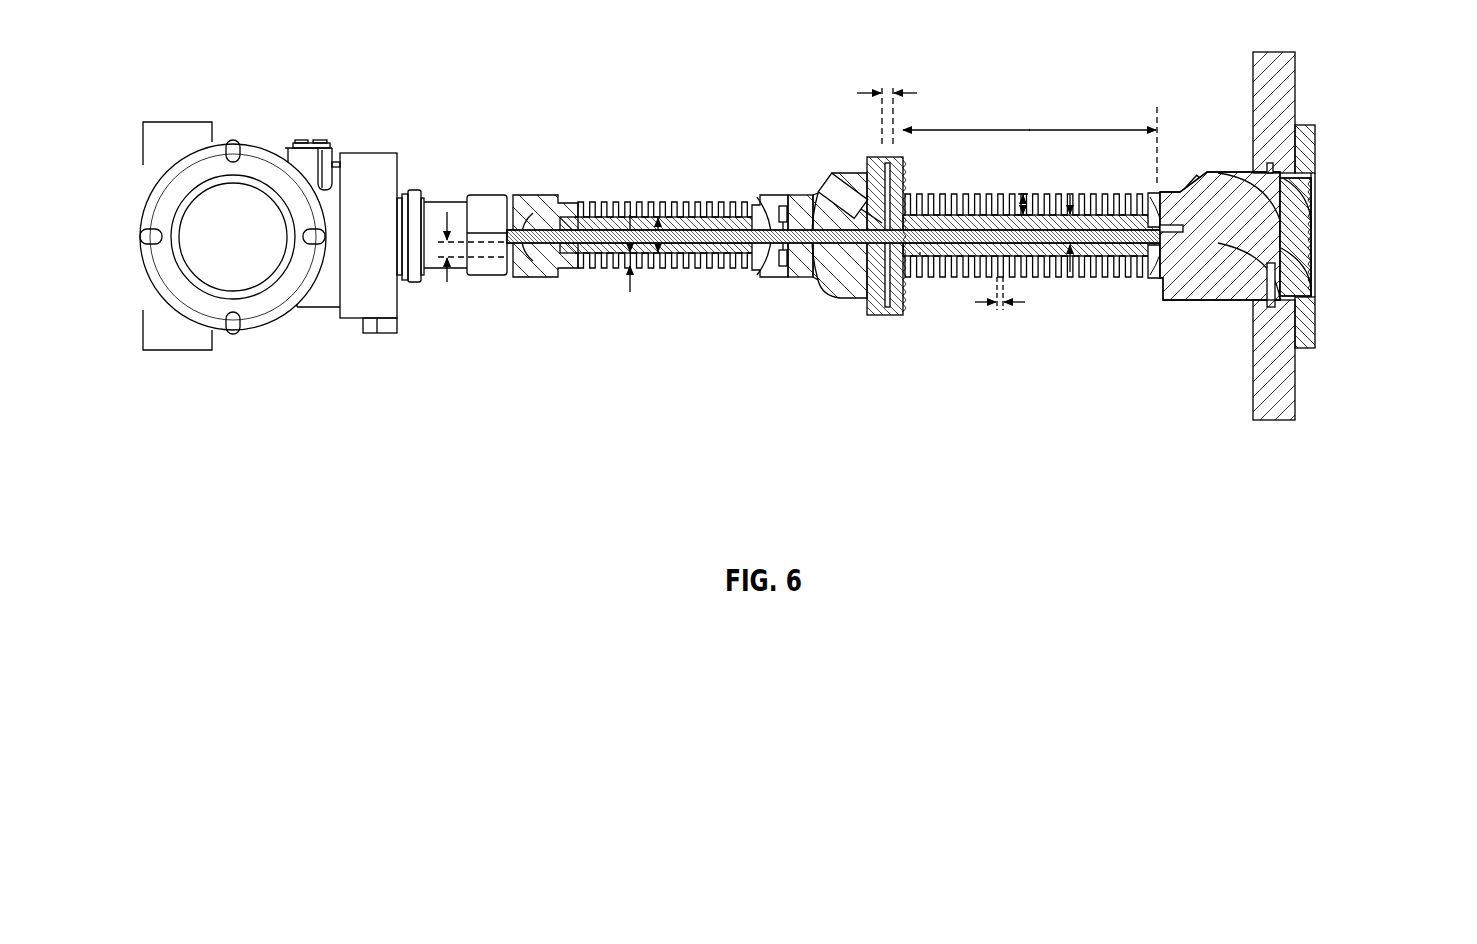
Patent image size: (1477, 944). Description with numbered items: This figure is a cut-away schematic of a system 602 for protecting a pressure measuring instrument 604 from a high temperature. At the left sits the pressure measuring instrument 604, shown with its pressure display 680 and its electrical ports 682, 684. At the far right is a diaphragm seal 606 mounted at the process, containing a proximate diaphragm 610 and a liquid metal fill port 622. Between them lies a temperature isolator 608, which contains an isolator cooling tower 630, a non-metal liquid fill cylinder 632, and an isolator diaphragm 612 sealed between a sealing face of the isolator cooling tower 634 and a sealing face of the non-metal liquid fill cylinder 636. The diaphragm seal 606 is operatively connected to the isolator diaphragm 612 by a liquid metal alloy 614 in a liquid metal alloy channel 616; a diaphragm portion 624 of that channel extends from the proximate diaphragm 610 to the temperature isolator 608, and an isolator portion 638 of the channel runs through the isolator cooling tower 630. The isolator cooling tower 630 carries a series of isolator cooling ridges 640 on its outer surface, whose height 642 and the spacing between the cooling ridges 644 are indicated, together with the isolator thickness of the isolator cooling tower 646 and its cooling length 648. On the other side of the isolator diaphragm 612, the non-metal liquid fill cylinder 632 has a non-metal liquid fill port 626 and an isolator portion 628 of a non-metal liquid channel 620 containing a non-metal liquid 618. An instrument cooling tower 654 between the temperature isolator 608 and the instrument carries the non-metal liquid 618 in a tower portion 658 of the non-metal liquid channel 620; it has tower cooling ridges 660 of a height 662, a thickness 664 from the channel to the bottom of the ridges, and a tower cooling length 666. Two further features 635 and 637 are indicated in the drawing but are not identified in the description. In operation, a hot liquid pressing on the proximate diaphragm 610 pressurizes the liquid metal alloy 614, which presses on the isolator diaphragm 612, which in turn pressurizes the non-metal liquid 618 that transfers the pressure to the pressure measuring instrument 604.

The system 602 is at (172, 62).
The pressure measuring instrument 604 is at (397, 383).
The diaphragm seal 606 is at (1317, 410).
The temperature isolator 608 is at (1160, 393).
The proximate diaphragm 610 is at (1317, 183).
The isolator diaphragm 612 is at (840, 176).
The liquid metal alloy 614 is at (1178, 285).
The liquid metal alloy channel 616 is at (906, 205).
The non-metal liquid 618 is at (545, 277).
The non-metal liquid channel 620 is at (582, 228).
The liquid metal fill port 622 is at (1160, 188).
The diaphragm portion of the liquid metal alloy channel 624 is at (1283, 290).
The non-metal liquid fill port 626 is at (820, 190).
The isolator portion of the non-metal liquid channel 628 is at (843, 297).
The isolator cooling tower 630 is at (1187, 338).
The non-metal liquid fill cylinder 632 is at (892, 338).
The sealing face of the isolator cooling tower 634 is at (899, 93).
The nose portion 635 is at (1383, 240).
The sealing face of the non-metal liquid fill cylinder 636 is at (876, 93).
The ball 637 is at (757, 249).
The isolator portion of the liquid metal alloy channel 638 is at (920, 252).
The isolator cooling ridges 640 is at (972, 193).
The height of the isolator cooling ridges 642 is at (1025, 193).
The spacing between the cooling ridges 644 is at (990, 302).
The isolator thickness of the isolator cooling tower 646 is at (450, 276).
The cooling length 648 is at (1030, 128).
The instrument cooling tower 654 is at (790, 390).
The tower portion of the non-metal liquid channel 658 is at (523, 228).
The tower cooling ridges 660 is at (617, 204).
The height of the tower cooling ridges 662 is at (628, 282).
The thickness of the instrument cooling tower 664 is at (734, 201).
The tower cooling length 666 is at (760, 338).
The pressure display 680 is at (208, 253).
The electrical port 682 is at (177, 351).
The electrical port 684 is at (177, 121).